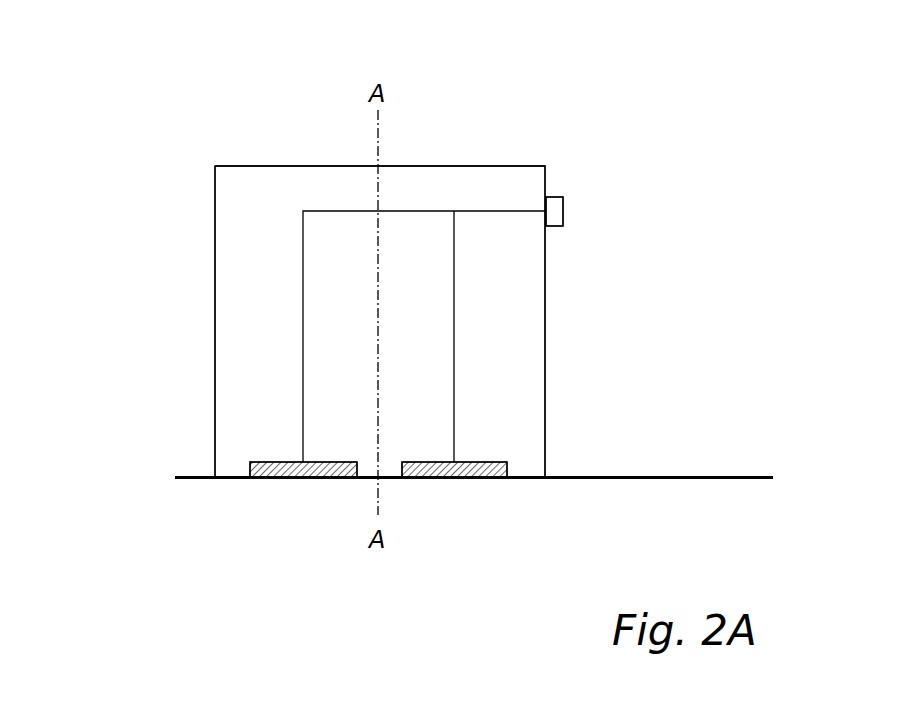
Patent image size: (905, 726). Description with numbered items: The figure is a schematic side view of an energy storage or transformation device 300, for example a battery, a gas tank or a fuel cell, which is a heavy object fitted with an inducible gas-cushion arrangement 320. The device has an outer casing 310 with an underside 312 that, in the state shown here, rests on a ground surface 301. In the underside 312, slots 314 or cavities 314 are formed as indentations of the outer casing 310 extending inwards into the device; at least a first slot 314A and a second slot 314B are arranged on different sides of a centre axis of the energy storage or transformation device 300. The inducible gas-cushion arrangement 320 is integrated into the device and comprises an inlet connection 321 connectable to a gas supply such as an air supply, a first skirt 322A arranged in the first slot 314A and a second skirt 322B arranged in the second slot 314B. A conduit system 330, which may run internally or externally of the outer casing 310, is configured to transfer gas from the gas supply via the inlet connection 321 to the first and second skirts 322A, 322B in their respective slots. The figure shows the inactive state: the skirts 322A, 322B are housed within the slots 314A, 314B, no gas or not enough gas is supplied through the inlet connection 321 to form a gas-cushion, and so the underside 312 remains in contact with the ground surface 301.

The energy storage or transformation device 300 is at (280, 90).
The ground surface 301 is at (745, 477).
The outer casing 310 is at (545, 422).
The underside 312 is at (538, 498).
The slots 314 is at (218, 496).
The first slot 314A is at (335, 470).
The second slot 314B is at (423, 472).
The inducible gas-cushion arrangement 320 is at (592, 201).
The inlet connection 321 is at (563, 215).
The first skirt 322A is at (259, 492).
The second skirt 322B is at (473, 504).
The conduit system 330 is at (265, 208).